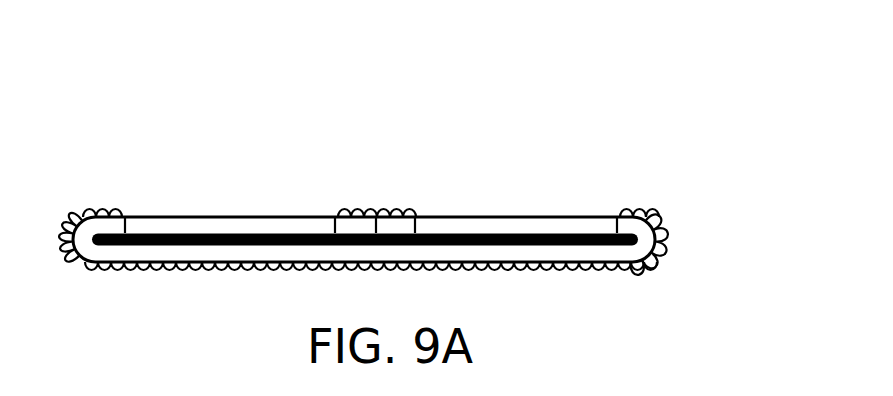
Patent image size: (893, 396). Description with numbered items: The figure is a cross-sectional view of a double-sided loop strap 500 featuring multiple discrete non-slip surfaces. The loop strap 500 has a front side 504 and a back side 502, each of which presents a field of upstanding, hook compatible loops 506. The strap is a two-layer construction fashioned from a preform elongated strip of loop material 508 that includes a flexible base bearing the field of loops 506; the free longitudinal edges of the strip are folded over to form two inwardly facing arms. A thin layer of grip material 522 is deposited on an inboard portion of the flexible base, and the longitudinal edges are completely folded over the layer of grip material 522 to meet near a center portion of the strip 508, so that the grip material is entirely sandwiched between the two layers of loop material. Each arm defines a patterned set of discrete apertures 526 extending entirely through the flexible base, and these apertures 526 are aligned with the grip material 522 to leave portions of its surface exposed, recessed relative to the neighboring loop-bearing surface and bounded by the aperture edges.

The loop strap 500 is at (672, 105).
The back side 502 is at (507, 145).
The front side 504 is at (548, 326).
The hook compatible loops 506 is at (82, 205).
The strip of loop material 508 is at (663, 220).
The layer of grip material 522 is at (545, 222).
The apertures 526 is at (237, 222).